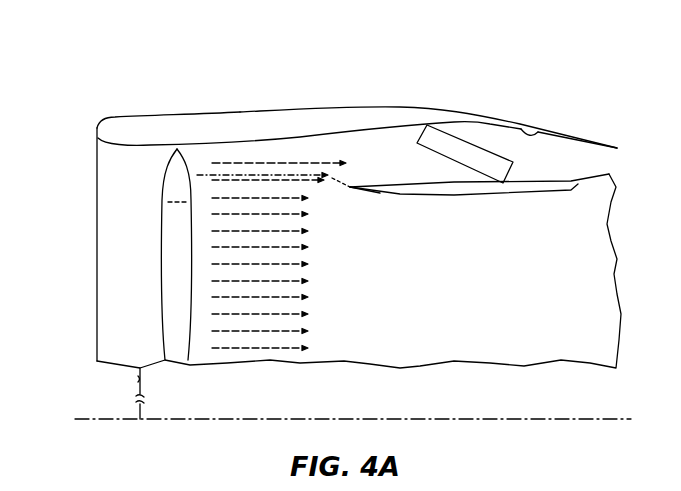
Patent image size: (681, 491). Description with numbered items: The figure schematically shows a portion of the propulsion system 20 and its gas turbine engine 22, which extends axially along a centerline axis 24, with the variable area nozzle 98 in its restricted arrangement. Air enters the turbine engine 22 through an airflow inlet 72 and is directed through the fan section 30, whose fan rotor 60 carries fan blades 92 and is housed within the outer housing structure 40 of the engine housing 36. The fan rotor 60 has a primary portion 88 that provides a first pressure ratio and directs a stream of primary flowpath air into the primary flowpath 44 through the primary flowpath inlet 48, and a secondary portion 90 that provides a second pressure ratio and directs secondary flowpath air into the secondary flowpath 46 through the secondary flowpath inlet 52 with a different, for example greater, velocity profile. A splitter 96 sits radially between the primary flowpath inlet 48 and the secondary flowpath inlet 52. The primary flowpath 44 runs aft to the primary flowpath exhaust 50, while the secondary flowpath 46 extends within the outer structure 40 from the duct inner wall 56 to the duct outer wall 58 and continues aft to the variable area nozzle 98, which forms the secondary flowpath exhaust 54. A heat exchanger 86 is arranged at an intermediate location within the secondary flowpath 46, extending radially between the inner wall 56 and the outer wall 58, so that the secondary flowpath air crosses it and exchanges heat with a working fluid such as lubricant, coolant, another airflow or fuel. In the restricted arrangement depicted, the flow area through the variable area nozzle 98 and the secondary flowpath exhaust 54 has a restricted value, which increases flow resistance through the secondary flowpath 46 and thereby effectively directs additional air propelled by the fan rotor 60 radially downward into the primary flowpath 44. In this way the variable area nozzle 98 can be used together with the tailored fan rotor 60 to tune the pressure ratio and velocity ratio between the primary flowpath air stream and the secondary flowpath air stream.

The propulsion system 20 is at (352, 190).
The gas turbine engine 22 is at (124, 63).
The centerline axis 24 is at (88, 420).
The fan section 30 is at (181, 113).
The engine housing 36 is at (380, 83).
The outer housing structure 40 is at (281, 105).
The primary flowpath 44 is at (427, 295).
The secondary flowpath 46 is at (427, 178).
The primary flowpath inlet 48 is at (371, 290).
The primary flowpath exhaust 50 is at (618, 203).
The secondary flowpath inlet 52 is at (363, 165).
The secondary flowpath exhaust 54 is at (622, 165).
The duct inner wall 56 is at (550, 185).
The duct outer wall 58 is at (538, 130).
The fan rotor 60 is at (186, 312).
The airflow inlet 72 is at (97, 197).
The heat exchanger 86 is at (471, 143).
The primary portion of the fan rotor 88 is at (148, 262).
The secondary portion of the fan rotor 90 is at (152, 180).
The fan blade 92 is at (160, 300).
The splitter 96 is at (383, 196).
The variable area nozzle 98 is at (582, 200).